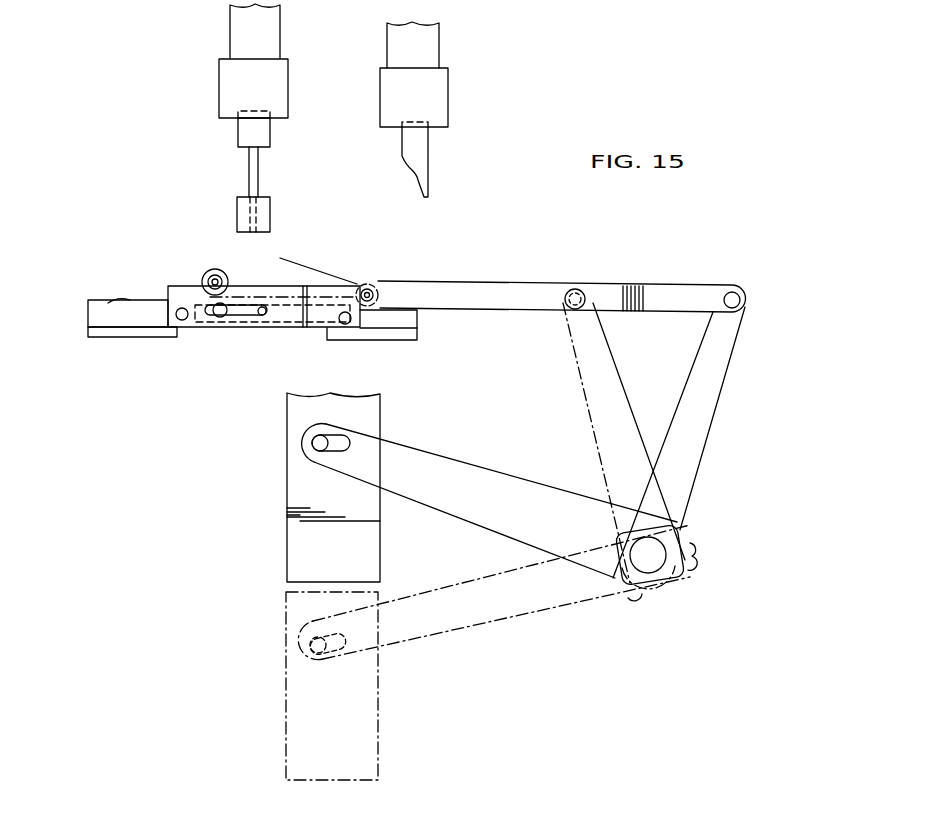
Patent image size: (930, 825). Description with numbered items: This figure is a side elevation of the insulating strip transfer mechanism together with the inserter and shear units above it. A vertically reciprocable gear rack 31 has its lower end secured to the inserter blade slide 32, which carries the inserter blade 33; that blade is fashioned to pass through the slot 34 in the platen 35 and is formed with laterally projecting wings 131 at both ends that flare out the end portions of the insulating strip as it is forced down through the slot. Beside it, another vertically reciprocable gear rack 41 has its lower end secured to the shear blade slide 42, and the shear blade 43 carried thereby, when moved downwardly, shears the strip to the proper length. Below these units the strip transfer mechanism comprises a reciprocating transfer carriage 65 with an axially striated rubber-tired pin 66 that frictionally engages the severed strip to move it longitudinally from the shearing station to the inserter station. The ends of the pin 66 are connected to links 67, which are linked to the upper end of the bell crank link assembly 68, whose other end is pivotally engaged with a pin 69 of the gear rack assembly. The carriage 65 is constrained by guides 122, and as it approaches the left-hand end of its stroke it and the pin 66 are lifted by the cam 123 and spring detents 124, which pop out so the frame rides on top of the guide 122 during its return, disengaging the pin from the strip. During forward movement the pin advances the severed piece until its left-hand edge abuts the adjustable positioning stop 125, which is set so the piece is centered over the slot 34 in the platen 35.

The gear rack 31 is at (230, 34).
The inserter blade slide 32 is at (219, 98).
The inserter blade 33 is at (249, 162).
The laterally projecting wings 131 is at (240, 232).
The gear rack 41 is at (390, 42).
The shear blade slide 42 is at (448, 94).
The shear blade 43 is at (428, 155).
The adjustable positioning stop 125 is at (88, 300).
The platen 35 is at (127, 337).
The guides 122 is at (278, 328).
The slot 34 is at (252, 318).
The cam 123 is at (207, 300).
The spring detents 124 is at (222, 276).
The rubber-tired pin 66 is at (368, 284).
The transfer carriage 65 is at (507, 276).
The links 67 is at (655, 285).
The bell crank link assembly 68 is at (717, 405).
The pin 69 is at (327, 640).